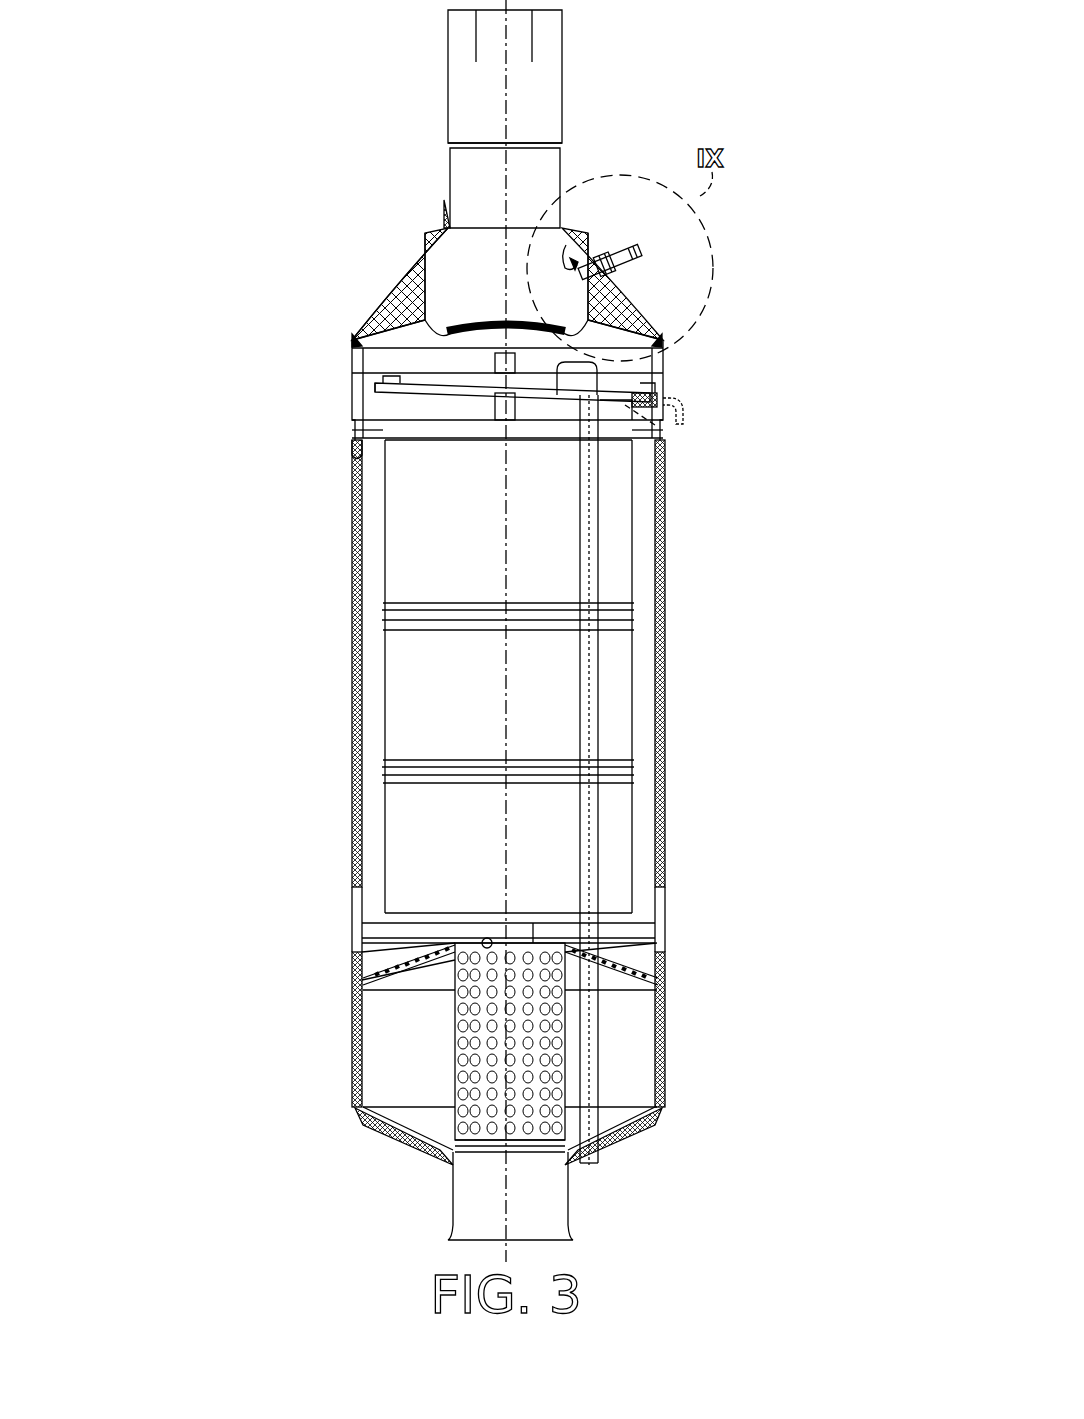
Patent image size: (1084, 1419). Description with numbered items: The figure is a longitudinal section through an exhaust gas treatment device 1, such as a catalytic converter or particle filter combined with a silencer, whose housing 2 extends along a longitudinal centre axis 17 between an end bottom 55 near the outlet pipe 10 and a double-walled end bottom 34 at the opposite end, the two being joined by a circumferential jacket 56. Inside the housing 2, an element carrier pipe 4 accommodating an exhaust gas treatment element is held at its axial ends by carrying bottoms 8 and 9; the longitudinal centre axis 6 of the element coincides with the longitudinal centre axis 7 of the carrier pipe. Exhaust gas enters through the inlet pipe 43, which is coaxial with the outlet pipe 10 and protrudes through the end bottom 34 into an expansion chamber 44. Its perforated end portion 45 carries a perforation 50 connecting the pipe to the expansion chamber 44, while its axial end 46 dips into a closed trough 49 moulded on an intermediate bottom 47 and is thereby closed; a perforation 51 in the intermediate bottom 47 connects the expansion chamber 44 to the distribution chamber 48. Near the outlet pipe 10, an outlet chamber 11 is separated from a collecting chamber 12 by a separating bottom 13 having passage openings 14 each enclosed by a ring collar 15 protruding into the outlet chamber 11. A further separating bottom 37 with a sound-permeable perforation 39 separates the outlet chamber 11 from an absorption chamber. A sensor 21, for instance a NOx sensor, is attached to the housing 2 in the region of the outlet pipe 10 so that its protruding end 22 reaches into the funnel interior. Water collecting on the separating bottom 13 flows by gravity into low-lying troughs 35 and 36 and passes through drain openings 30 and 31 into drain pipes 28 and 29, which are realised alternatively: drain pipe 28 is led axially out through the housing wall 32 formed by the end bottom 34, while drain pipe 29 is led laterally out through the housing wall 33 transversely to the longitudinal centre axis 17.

The exhaust gas treatment device 1 is at (286, 164).
The housing 2 is at (668, 690).
The element carrier pipe 4 is at (634, 826).
The longitudinal centre axis 6 is at (508, 734).
The longitudinal centre axis 7 is at (504, 686).
The carrying bottom 8 is at (648, 922).
The carrying bottom 9 is at (362, 445).
The outlet pipe 10 is at (562, 100).
The outlet chamber 11 is at (358, 365).
The collecting chamber 12 is at (362, 402).
The separating bottom 13 is at (452, 396).
The passage opening 14 is at (408, 443).
The ring collar 15 is at (405, 440).
The longitudinal centre axis 17 is at (510, 82).
The sensor 21 is at (610, 249).
The protruding end 22 is at (562, 260).
The drain pipe 28 is at (593, 713).
The drain pipe 29 is at (688, 415).
The drain opening 30 is at (560, 382).
The drain opening 31 is at (652, 392).
The housing wall 32 is at (625, 1112).
The housing wall 33 is at (666, 398).
The end bottom 34 is at (430, 1160).
The trough 35 is at (603, 403).
The trough 36 is at (660, 425).
The separating bottom 37 is at (638, 322).
The perforation 39 is at (393, 302).
The inlet pipe 43 is at (570, 1195).
The expansion chamber 44 is at (397, 1042).
The perforated end portion 45 is at (455, 1060).
The axial end 46 is at (533, 940).
The intermediate bottom 47 is at (420, 978).
The distribution chamber 48 is at (373, 950).
The trough 49 is at (487, 940).
The perforation 50 is at (532, 1030).
The perforation 51 is at (610, 975).
The end bottom 55 is at (420, 252).
The jacket 56 is at (352, 734).